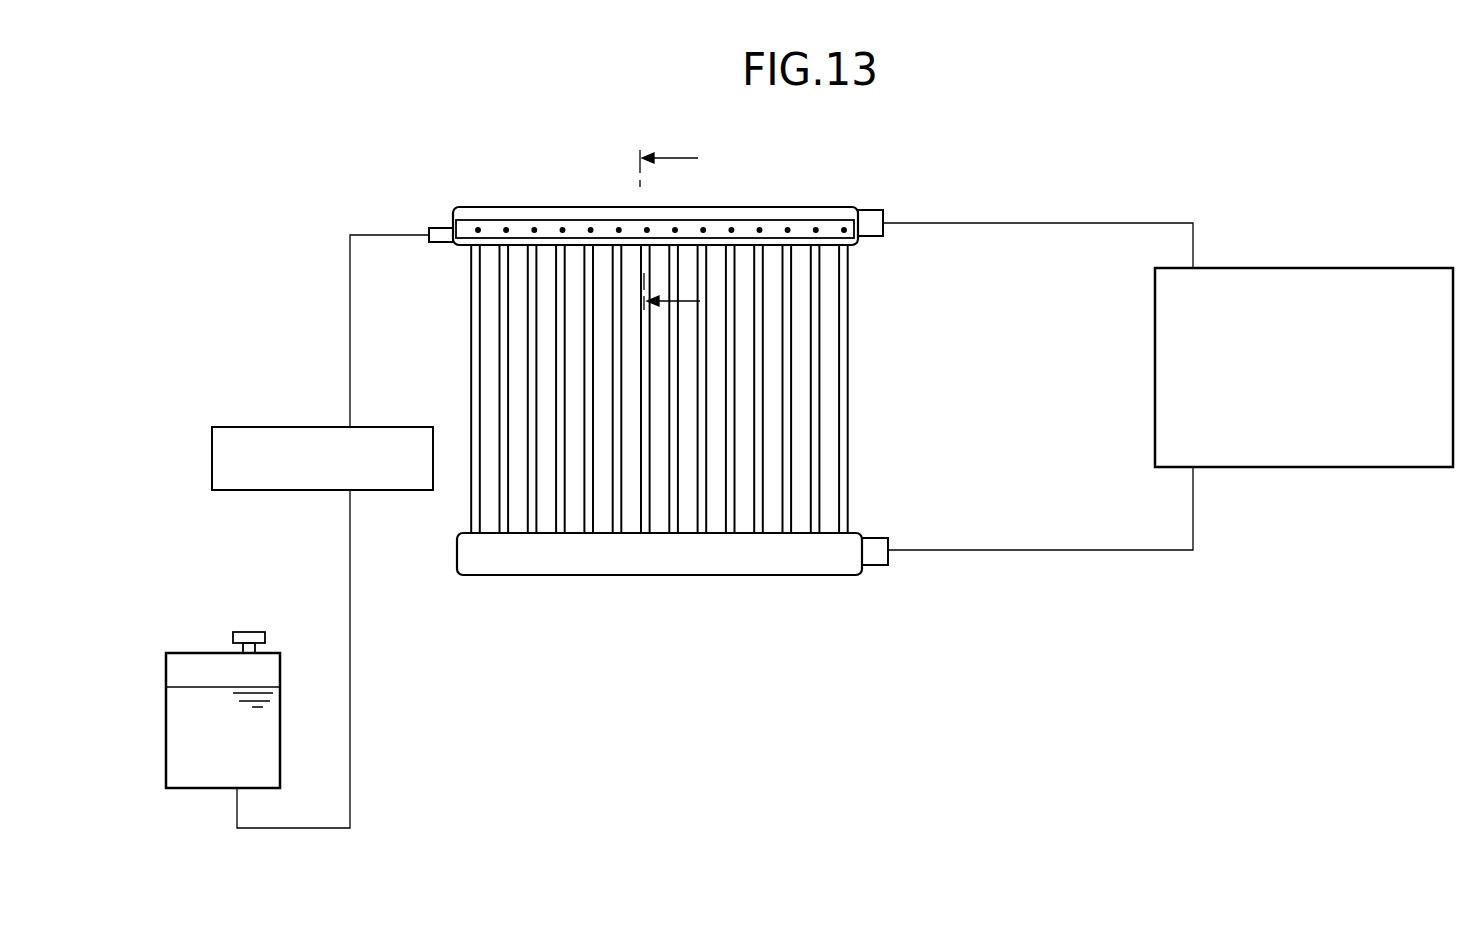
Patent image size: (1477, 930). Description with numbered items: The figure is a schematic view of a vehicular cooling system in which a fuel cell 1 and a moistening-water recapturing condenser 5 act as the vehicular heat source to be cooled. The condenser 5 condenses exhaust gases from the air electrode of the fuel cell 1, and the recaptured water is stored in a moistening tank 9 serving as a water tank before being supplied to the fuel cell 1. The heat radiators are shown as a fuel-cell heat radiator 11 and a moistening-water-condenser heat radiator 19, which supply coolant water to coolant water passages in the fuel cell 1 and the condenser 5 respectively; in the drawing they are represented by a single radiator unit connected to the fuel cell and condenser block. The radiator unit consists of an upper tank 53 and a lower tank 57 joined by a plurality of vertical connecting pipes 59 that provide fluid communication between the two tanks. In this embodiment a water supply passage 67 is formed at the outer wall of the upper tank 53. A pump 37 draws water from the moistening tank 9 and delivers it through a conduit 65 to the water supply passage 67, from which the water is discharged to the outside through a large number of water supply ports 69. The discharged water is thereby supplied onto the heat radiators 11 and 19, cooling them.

The fuel cell 1 is at (1168, 368).
The moistening-water recapturing condenser 5 is at (1295, 268).
The moistening tank 9 is at (196, 653).
The fuel-cell heat radiator 11 is at (658, 397).
The moistening-water-condenser heat radiator 19 is at (658, 397).
The pump 37 is at (285, 427).
The upper tank 53 is at (775, 210).
The lower tank 57 is at (528, 567).
The connecting pipe 59 is at (558, 432).
The conduit 65 is at (348, 275).
The water supply passage 67 is at (553, 224).
The water supply ports 69 is at (703, 230).